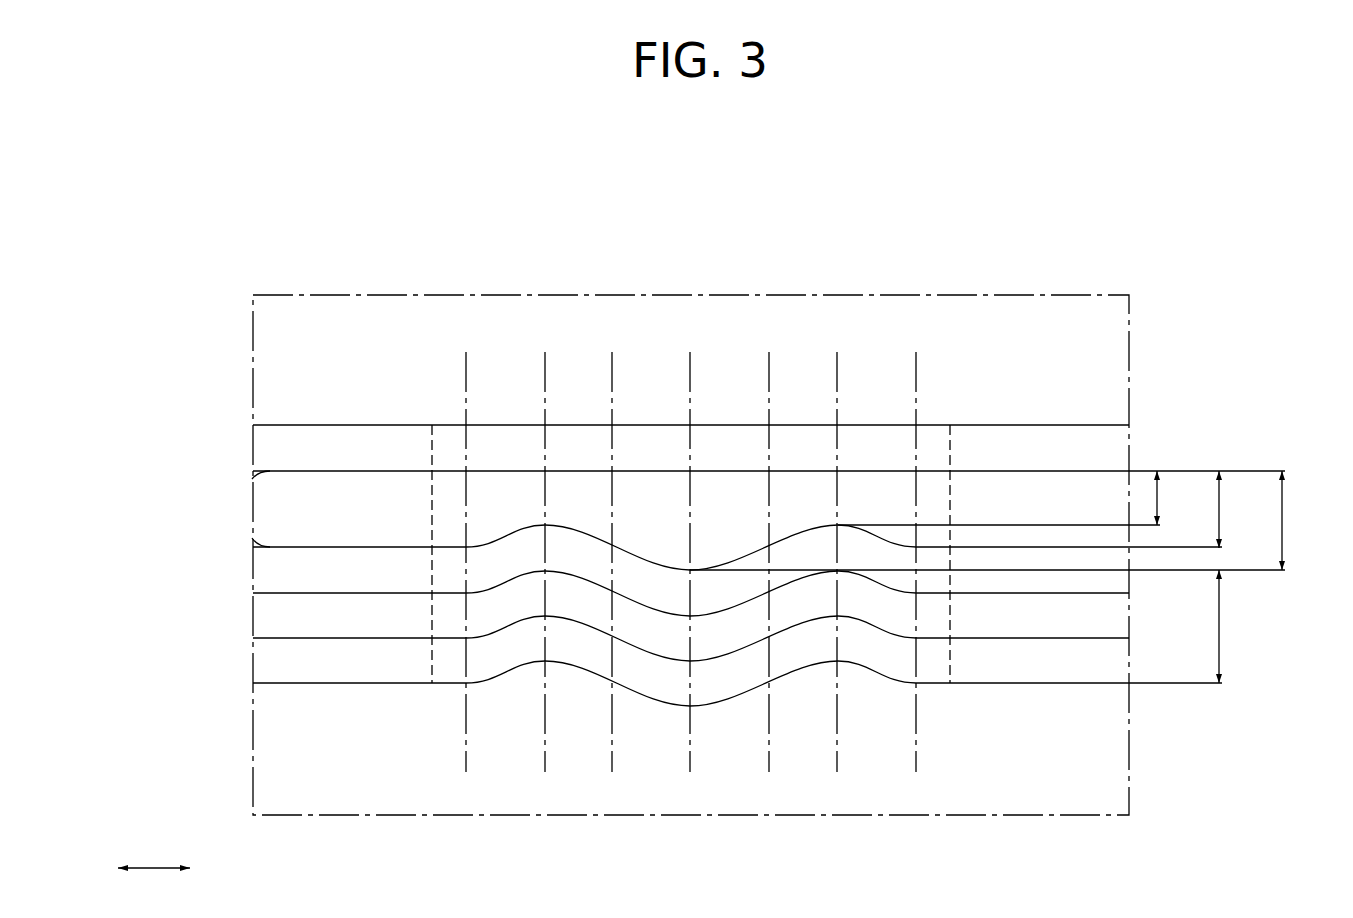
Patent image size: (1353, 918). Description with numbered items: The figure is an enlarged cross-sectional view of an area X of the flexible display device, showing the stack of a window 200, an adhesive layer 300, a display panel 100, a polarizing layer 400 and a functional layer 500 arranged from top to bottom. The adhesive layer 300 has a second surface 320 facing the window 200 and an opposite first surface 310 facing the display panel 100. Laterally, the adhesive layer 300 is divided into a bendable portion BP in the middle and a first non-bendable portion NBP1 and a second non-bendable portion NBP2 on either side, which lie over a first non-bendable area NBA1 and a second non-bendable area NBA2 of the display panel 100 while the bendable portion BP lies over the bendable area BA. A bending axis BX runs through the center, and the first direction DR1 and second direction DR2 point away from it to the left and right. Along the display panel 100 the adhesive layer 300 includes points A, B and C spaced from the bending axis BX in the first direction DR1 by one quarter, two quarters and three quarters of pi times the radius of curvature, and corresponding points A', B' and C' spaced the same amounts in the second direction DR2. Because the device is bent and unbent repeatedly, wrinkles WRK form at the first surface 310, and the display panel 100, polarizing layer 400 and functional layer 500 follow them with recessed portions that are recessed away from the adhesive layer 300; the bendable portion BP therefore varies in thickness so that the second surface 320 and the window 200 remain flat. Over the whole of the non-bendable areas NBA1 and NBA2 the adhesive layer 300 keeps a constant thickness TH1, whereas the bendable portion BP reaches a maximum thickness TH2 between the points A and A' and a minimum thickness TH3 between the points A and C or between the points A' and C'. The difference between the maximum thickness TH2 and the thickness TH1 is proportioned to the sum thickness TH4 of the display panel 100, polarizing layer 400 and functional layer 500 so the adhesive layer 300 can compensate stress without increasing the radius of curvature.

The display panel 100 is at (258, 617).
The window 200 is at (258, 440).
The adhesive layer 300 is at (258, 508).
The first surface 310 is at (252, 538).
The second surface 320 is at (252, 478).
The polarizing layer 400 is at (258, 572).
The functional layer 500 is at (258, 662).
The area X is at (252, 358).
The first non-bendable portion NBP1 is at (325, 497).
The second non-bendable portion NBP2 is at (1024, 497).
The bendable portion BP is at (727, 497).
The wrinkle WRK is at (652, 522).
The first non-bendable area NBA1 is at (330, 625).
The second non-bendable area NBA2 is at (1040, 628).
The bendable area BA is at (730, 638).
The bending axis BX is at (690, 546).
The thickness TH1 is at (1240, 509).
The maximum thickness TH2 is at (1303, 520).
The minimum thickness TH3 is at (1177, 498).
The sum thickness TH4 is at (1240, 626).
The first direction DR1 is at (133, 870).
The second direction DR2 is at (206, 870).
The point A is at (613, 546).
The point B is at (546, 546).
The point C is at (466, 546).
The point A' is at (773, 546).
The point B' is at (841, 546).
The point C' is at (919, 546).